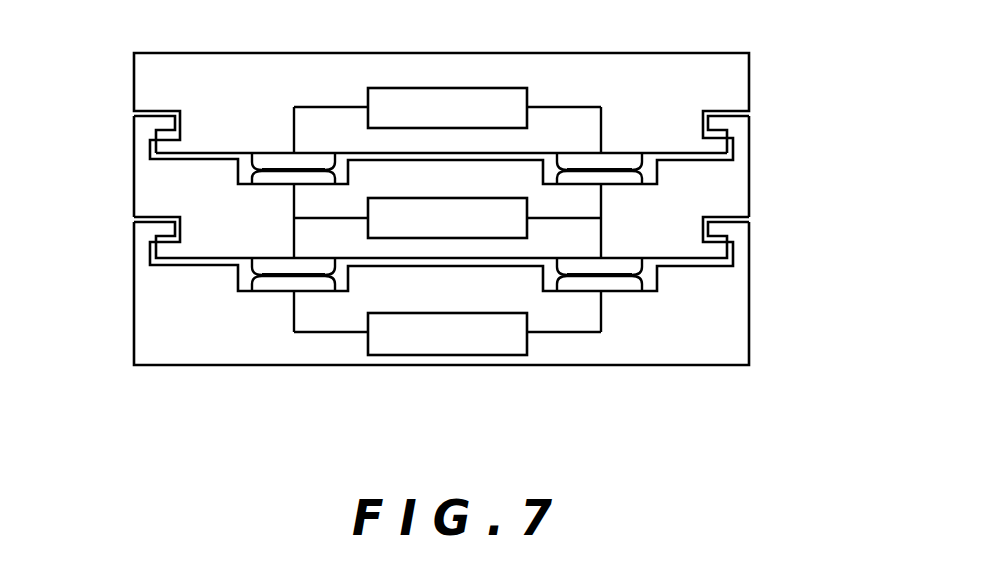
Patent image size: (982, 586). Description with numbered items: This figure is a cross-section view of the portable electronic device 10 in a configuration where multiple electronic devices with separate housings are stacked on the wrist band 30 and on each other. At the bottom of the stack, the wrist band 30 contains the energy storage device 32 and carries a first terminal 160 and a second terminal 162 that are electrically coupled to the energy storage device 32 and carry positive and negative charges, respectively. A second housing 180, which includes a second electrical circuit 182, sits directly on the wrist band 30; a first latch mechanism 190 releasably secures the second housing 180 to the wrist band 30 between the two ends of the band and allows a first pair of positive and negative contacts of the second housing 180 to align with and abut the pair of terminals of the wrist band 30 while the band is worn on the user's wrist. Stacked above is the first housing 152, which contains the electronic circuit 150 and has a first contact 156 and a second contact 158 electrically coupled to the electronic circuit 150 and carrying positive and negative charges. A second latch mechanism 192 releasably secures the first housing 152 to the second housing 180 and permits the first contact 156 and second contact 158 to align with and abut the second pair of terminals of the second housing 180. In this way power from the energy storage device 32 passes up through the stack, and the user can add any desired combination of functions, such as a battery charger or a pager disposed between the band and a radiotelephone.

The portable electronic device 10 is at (803, 456).
The wrist band 30 is at (730, 308).
The energy storage device 32 is at (488, 348).
The electronic circuit 150 is at (518, 215).
The housing 152 is at (145, 190).
The first contact 156 is at (270, 265).
The second contact 158 is at (623, 265).
The first terminal 160 is at (308, 283).
The second terminal 162 is at (610, 285).
The second housing 180 is at (138, 85).
The second electrical circuit 182 is at (387, 95).
The first latch mechanism 190 is at (793, 235).
The second latch mechanism 192 is at (785, 133).